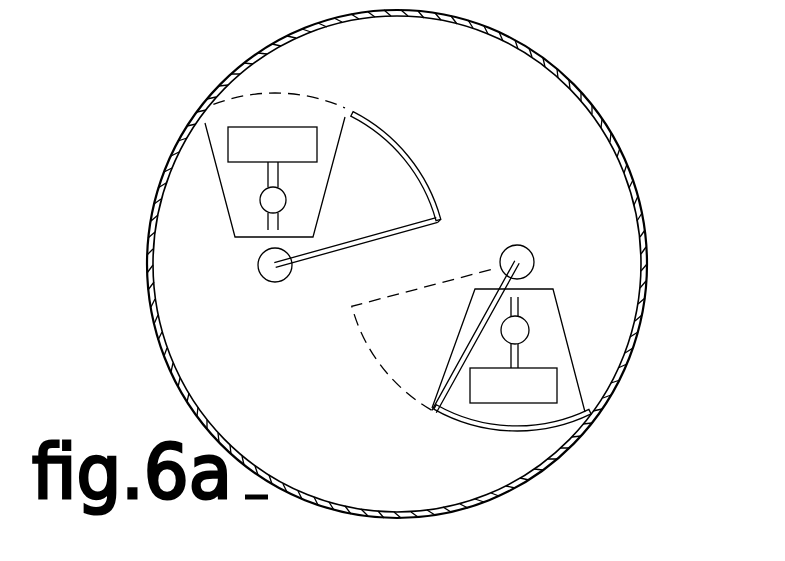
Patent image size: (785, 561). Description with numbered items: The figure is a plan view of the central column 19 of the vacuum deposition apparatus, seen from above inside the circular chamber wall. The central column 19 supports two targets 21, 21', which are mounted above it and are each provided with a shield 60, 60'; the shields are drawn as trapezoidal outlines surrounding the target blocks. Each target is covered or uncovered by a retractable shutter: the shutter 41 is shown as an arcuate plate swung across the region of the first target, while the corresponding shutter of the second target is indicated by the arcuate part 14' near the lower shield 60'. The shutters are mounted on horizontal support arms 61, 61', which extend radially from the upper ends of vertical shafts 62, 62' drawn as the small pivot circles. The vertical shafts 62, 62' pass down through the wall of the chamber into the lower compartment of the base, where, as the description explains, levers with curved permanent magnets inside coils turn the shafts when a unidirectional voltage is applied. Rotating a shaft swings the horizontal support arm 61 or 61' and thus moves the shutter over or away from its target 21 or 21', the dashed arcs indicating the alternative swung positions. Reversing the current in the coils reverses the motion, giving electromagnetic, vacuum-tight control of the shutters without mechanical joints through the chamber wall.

The central column 19 is at (535, 195).
The target 21 is at (249, 141).
The target 21' is at (593, 386).
The shutter 41 is at (410, 148).
The shield 60 is at (233, 165).
The shield 60' is at (534, 347).
The horizontal support arm 61 is at (455, 174).
The horizontal support arm 61' is at (573, 337).
The vertical shaft 62 is at (198, 237).
The vertical shaft 62' is at (608, 254).
The arcuate segment 14' is at (514, 463).